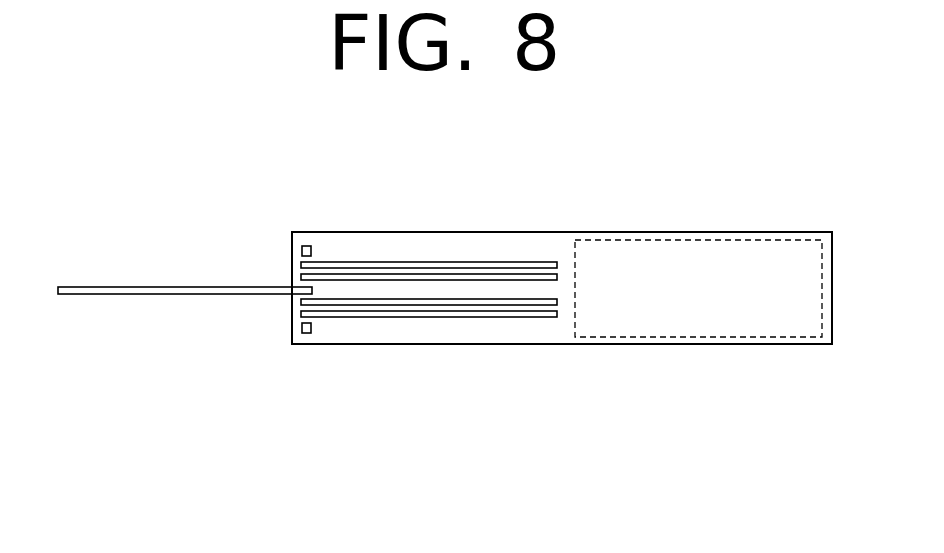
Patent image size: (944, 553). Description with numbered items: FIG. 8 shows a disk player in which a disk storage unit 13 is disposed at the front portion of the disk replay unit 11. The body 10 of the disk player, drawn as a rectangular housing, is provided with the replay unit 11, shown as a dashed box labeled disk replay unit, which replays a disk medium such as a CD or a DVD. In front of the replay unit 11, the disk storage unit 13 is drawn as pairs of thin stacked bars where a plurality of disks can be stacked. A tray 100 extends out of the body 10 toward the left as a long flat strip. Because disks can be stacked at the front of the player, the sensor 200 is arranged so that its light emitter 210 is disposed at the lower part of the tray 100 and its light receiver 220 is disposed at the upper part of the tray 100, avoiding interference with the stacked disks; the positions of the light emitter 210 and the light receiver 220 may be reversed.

The body 10 is at (768, 232).
The replay unit 11 is at (740, 337).
The disk storage unit 13 is at (495, 317).
The tray 100 is at (185, 285).
The sensor 200 is at (305, 405).
The light emitter 210 is at (306, 334).
The light receiver 220 is at (302, 252).